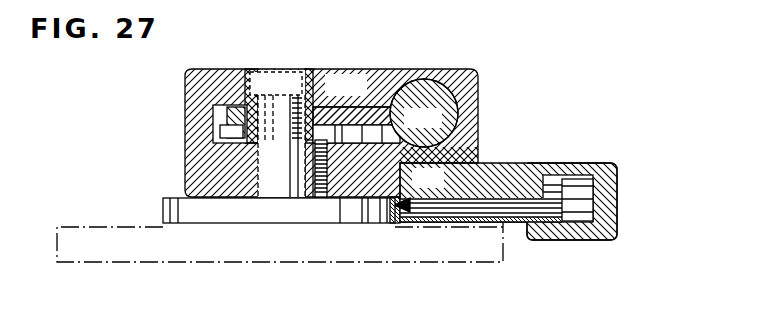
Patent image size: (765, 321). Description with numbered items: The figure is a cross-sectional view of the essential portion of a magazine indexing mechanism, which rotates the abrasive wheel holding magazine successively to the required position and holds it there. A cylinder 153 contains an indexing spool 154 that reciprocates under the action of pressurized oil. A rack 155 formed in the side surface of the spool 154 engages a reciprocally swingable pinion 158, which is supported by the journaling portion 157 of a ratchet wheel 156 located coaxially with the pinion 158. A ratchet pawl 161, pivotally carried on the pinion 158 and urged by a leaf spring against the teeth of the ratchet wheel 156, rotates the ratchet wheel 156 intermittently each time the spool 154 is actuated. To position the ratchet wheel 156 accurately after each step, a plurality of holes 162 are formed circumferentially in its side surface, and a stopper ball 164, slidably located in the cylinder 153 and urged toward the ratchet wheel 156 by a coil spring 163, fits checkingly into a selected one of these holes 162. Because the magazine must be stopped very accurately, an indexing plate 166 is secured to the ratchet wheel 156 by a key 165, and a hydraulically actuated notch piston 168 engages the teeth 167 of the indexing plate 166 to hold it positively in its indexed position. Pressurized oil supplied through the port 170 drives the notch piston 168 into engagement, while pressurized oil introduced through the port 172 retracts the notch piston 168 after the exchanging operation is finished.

The cylinder 153 is at (458, 78).
The indexing spool 154 is at (480, 111).
The rack 155 is at (424, 113).
The ratchet wheel 156 is at (220, 133).
The journaling portion 157 is at (355, 99).
The swingable pinion 158 is at (397, 70).
The ratchet pawl 161 is at (508, 201).
The holes 162 is at (281, 146).
The coil spring 163 is at (344, 201).
The stopper ball 164 is at (320, 196).
The key 165 is at (292, 84).
The indexing plate 166 is at (197, 211).
The teeth 167 is at (383, 210).
The notch piston 168 is at (590, 210).
The port 170 is at (612, 177).
The port 172 is at (546, 174).